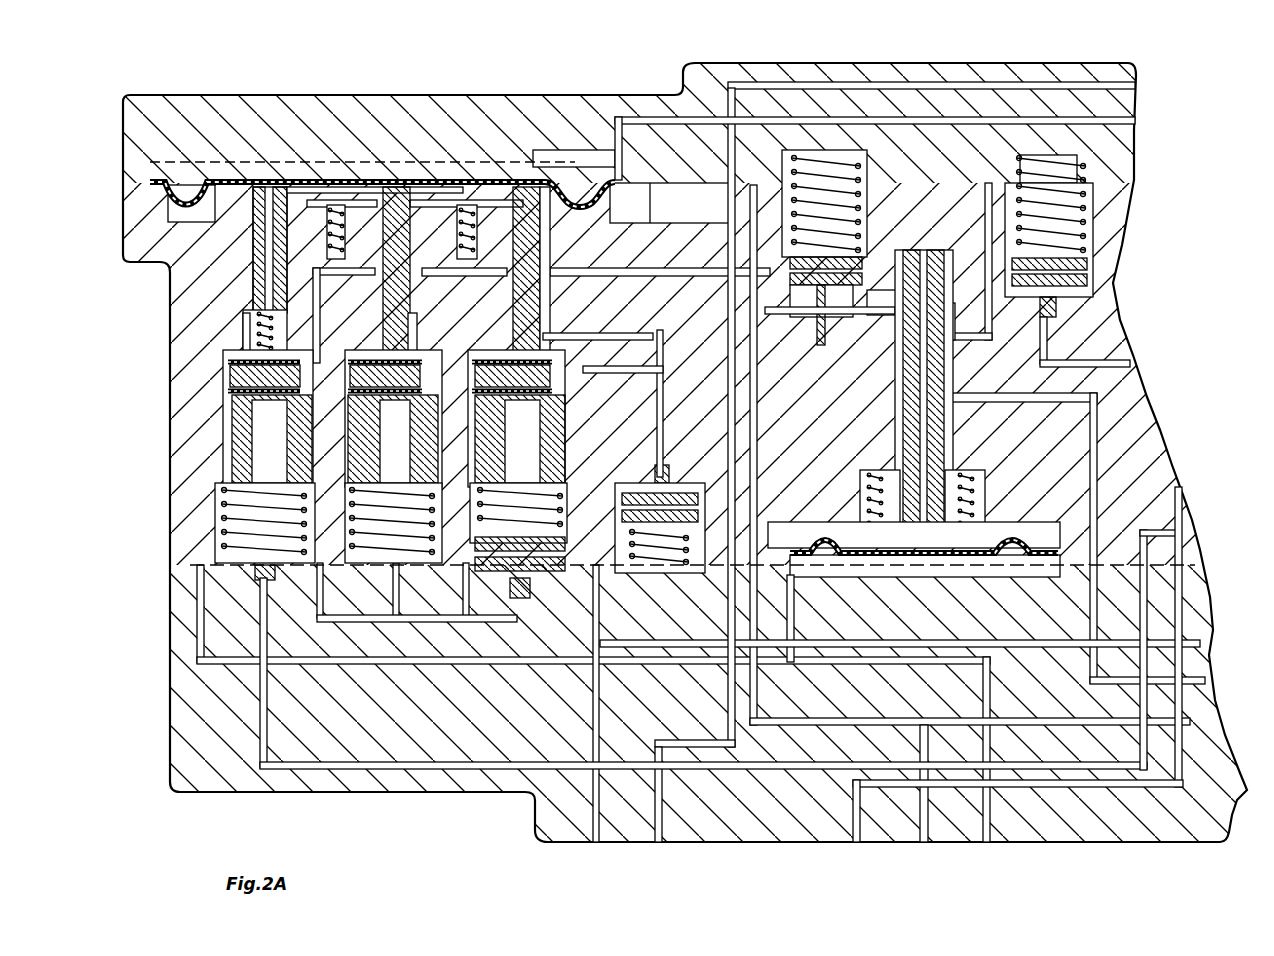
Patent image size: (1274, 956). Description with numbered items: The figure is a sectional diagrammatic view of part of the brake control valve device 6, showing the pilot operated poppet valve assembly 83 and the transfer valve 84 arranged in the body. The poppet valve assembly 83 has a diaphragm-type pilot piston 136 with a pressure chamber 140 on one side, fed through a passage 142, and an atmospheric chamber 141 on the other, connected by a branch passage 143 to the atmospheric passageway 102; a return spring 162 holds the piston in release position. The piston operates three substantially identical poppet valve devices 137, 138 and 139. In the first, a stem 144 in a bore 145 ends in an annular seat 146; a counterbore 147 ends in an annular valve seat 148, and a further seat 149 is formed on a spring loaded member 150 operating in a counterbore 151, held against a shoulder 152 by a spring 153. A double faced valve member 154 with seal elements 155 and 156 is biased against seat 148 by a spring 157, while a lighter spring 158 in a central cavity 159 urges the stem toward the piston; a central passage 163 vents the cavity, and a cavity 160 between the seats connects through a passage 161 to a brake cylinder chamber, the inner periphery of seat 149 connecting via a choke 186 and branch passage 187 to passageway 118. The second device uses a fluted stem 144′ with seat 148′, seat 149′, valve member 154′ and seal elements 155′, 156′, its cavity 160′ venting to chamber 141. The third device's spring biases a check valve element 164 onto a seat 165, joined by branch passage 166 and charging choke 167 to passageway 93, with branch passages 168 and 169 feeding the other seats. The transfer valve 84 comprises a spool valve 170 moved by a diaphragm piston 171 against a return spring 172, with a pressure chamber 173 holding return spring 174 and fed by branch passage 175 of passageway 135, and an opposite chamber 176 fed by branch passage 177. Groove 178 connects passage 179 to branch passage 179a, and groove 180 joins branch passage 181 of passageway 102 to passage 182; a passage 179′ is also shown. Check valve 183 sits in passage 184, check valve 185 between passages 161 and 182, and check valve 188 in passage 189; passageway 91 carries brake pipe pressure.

The brake control valve device 6 is at (158, 709).
The pilot operated poppet valve assembly 83 is at (410, 156).
The transfer valve 84 is at (983, 514).
The passageway 91 is at (640, 648).
The passageway 93 is at (1183, 508).
The passageway 102 is at (740, 92).
The passageway 118 is at (1182, 532).
The passageway 135 is at (1205, 721).
The pilot piston 136 is at (150, 165).
The poppet valve device 137 is at (238, 314).
The poppet valve device 138 is at (375, 318).
The poppet valve device 139 is at (509, 318).
The pressure chamber 140 is at (567, 150).
The atmospheric chamber 141 is at (671, 203).
The passage 142 is at (655, 112).
The branch passage 143 is at (705, 222).
The stem 144 is at (262, 250).
The valve stem 144′ is at (400, 235).
The bore 145 is at (262, 268).
The annular seat 146 is at (230, 353).
The counterbore 147 is at (232, 420).
The annular valve seat 148 is at (230, 365).
The annular valve seat 148′ is at (355, 333).
The annular valve seat 149 is at (230, 400).
The annular valve seat 149′ is at (365, 405).
The spring loaded member 150 is at (230, 470).
The counterbore 151 is at (228, 440).
The shoulder 152 is at (230, 460).
The spring 153 is at (220, 540).
The double faced valve member 154 is at (230, 376).
The double faced valve member 154′ is at (412, 372).
The seal element 155 is at (302, 362).
The seal element 155′ is at (412, 355).
The seal element 156 is at (303, 388).
The seal element 156′ is at (420, 388).
The spring 157 is at (290, 418).
The spring 158 is at (258, 300).
The central cavity 159 is at (292, 315).
The cavity 160 is at (248, 335).
The cavity 160′ is at (416, 330).
The passage 161 is at (245, 345).
The return spring 162 is at (468, 228).
The central passage 163 is at (268, 232).
The one-way check valve element 164 is at (477, 578).
The annular valve seat 165 is at (492, 585).
The branch passage 166 is at (320, 268).
The charging choke 167 is at (522, 600).
The branch passage 168 is at (395, 578).
The branch passage 169 is at (312, 408).
The spool valve 170 is at (905, 430).
The diaphragm-type piston 171 is at (918, 562).
The return spring 172 is at (925, 185).
The pressure chamber 173 is at (1033, 525).
The piston return spring 174 is at (972, 470).
The branch passage 175 is at (770, 525).
The chamber 176 is at (1032, 582).
The branch passage 177 is at (792, 610).
The annular groove 178 is at (905, 415).
The passage 179 is at (666, 372).
The passage 179′ is at (478, 405).
The branch passage 179a is at (962, 402).
The annular groove 180 is at (930, 310).
The branch passage 181 is at (872, 316).
The passage 182 is at (598, 338).
The one-way check valve 183 is at (1085, 275).
The passage 184 is at (962, 345).
The one-way check valve 185 is at (694, 490).
The choke 186 is at (255, 578).
The branch passage 187 is at (262, 618).
The one-way check valve 188 is at (855, 262).
The passage 189 is at (780, 186).